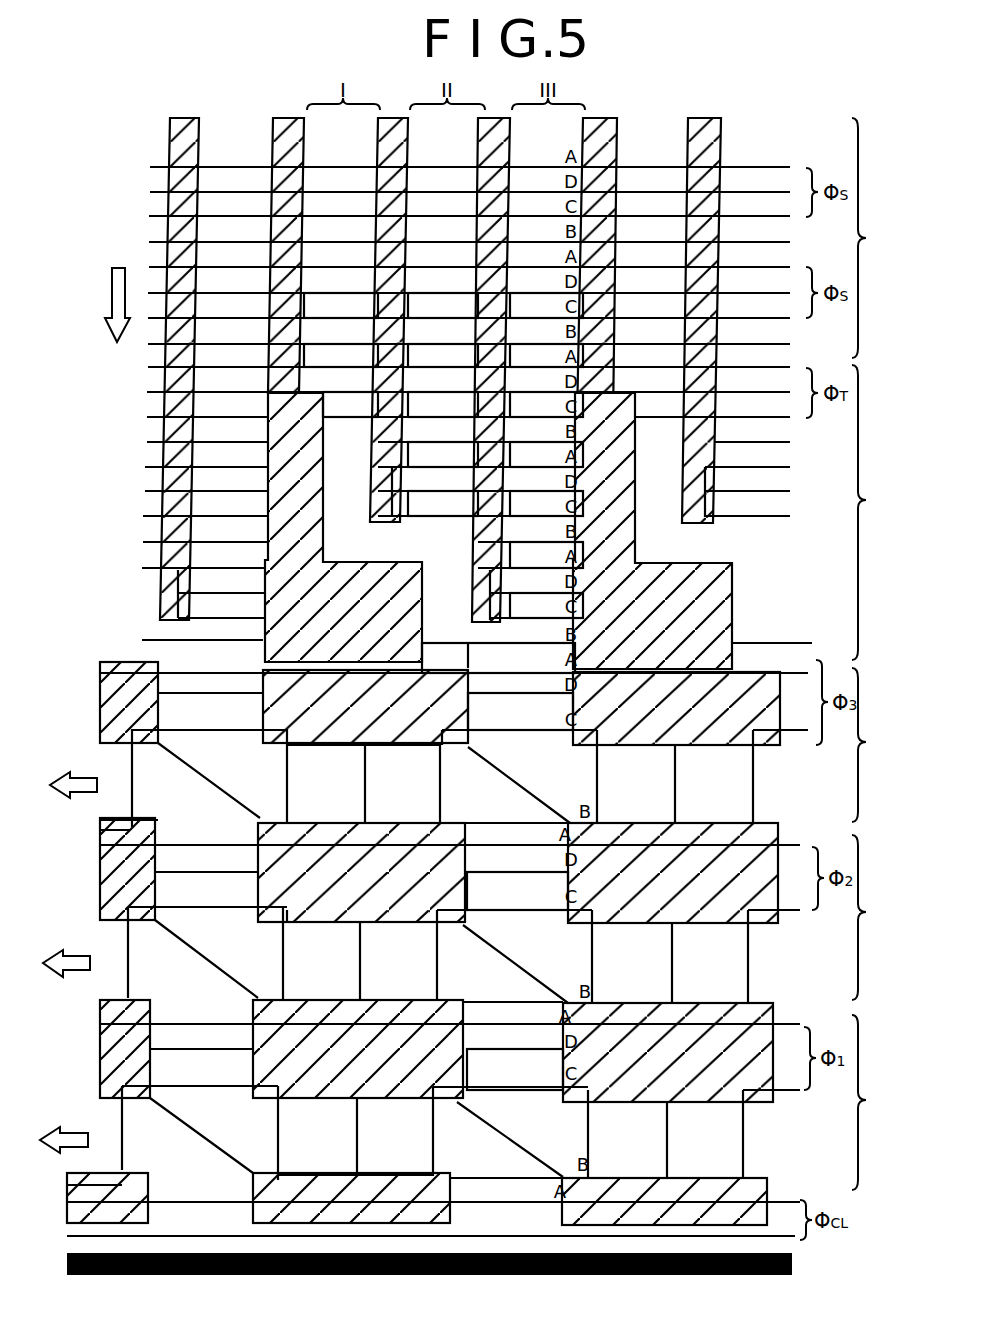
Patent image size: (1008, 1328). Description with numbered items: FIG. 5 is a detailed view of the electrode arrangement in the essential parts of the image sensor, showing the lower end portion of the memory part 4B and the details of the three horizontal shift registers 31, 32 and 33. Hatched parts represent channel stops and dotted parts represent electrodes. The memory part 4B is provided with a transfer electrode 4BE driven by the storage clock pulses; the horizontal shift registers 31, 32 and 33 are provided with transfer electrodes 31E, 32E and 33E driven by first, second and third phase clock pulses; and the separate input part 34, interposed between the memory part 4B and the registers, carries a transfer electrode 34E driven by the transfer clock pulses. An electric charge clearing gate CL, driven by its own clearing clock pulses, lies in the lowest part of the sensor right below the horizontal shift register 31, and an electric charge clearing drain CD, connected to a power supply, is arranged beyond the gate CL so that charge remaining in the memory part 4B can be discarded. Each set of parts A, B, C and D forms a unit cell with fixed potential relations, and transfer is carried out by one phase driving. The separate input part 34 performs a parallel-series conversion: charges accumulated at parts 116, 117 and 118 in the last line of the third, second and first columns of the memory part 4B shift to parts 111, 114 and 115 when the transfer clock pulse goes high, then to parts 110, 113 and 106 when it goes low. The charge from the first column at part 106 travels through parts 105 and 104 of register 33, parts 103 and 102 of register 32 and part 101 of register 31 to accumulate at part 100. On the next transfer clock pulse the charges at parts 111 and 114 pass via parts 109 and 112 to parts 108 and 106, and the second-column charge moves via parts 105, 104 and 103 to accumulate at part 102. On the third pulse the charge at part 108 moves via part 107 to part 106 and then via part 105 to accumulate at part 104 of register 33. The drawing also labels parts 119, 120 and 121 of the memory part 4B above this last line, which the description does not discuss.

The memory part 4B is at (875, 238).
The transfer electrode 4BE is at (762, 262).
The separate input part 34 is at (874, 512).
The transfer electrode 34E is at (770, 422).
The horizontal shift register 33 is at (874, 745).
The transfer electrode 33E is at (744, 782).
The horizontal shift register 32 is at (874, 917).
The transfer electrode 32E is at (740, 957).
The horizontal shift register 31 is at (874, 1102).
The transfer electrode 31E is at (737, 1133).
The electric charge clearing gate CL is at (842, 1250).
The electric charge clearing drain CD is at (795, 1262).
The part of horizontal register 31 100 is at (506, 1190).
The part of horizontal register 31 101 is at (515, 1069).
The part of horizontal register 32 102 is at (513, 1014).
The part of horizontal register 32 103 is at (517, 891).
The part of horizontal register 33 104 is at (516, 834).
The part of horizontal register 33 105 is at (520, 711).
The part of separate input part 34 106 is at (498, 658).
The part of separate input part 34 107 is at (546, 605).
The part of separate input part 34 108 is at (546, 555).
The part of separate input part 34 109 is at (546, 504).
The part of separate input part 34 110 is at (546, 454).
The part of separate input part 34 111 is at (546, 404).
The part of separate input part 34 112 is at (443, 504).
The part of separate input part 34 113 is at (443, 454).
The part of separate input part 34 114 is at (443, 404).
The part of separate input part 34 115 is at (350, 404).
The part of memory part 4B 116 is at (546, 355).
The part of memory part 4B 117 is at (443, 355).
The part of memory part 4B 118 is at (341, 355).
The charge packet 119 is at (546, 305).
The charge packet 120 is at (443, 305).
The charge packet 121 is at (341, 305).